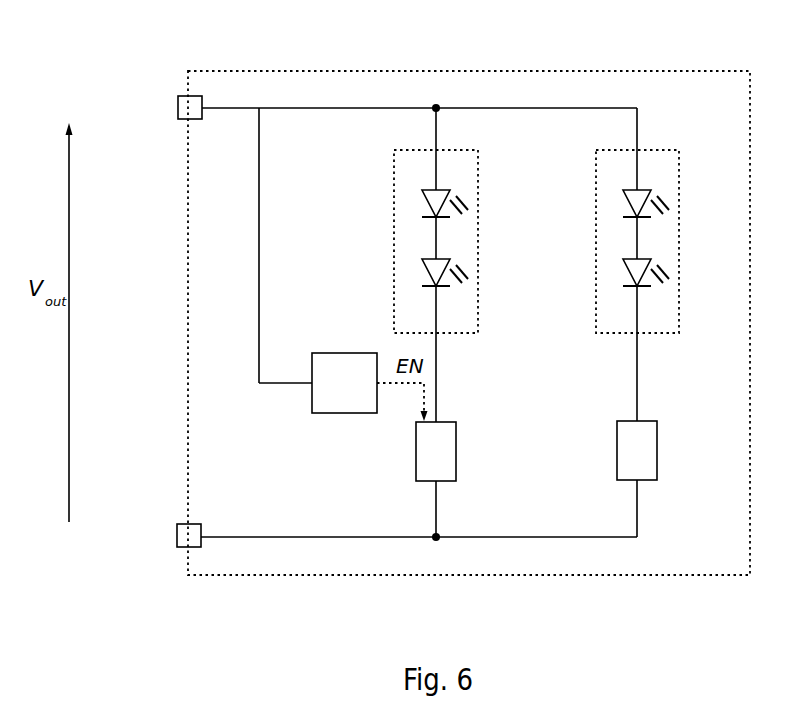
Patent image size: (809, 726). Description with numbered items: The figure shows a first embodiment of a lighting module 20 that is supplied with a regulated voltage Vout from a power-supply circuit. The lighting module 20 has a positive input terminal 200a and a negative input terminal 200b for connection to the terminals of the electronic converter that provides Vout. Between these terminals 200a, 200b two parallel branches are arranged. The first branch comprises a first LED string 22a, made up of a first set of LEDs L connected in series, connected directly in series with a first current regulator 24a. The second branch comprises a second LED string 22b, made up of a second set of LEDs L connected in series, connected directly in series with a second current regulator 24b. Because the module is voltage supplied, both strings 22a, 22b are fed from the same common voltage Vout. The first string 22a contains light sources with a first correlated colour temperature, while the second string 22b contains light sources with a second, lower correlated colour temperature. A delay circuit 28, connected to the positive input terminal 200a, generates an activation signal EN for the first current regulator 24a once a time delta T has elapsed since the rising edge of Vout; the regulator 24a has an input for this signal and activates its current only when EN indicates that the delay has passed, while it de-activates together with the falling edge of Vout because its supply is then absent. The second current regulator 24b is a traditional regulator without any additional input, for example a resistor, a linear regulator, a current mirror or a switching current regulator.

The lighting module 20 is at (622, 66).
The positive input terminal 200a is at (178, 91).
The negative input terminal 200b is at (183, 556).
The first LED string 22a is at (406, 142).
The second LED string 22b is at (651, 344).
The first current regulator 24a is at (442, 472).
The second current regulator 24b is at (642, 472).
The delay circuit 28 is at (348, 346).
The LEDs L is at (464, 181).